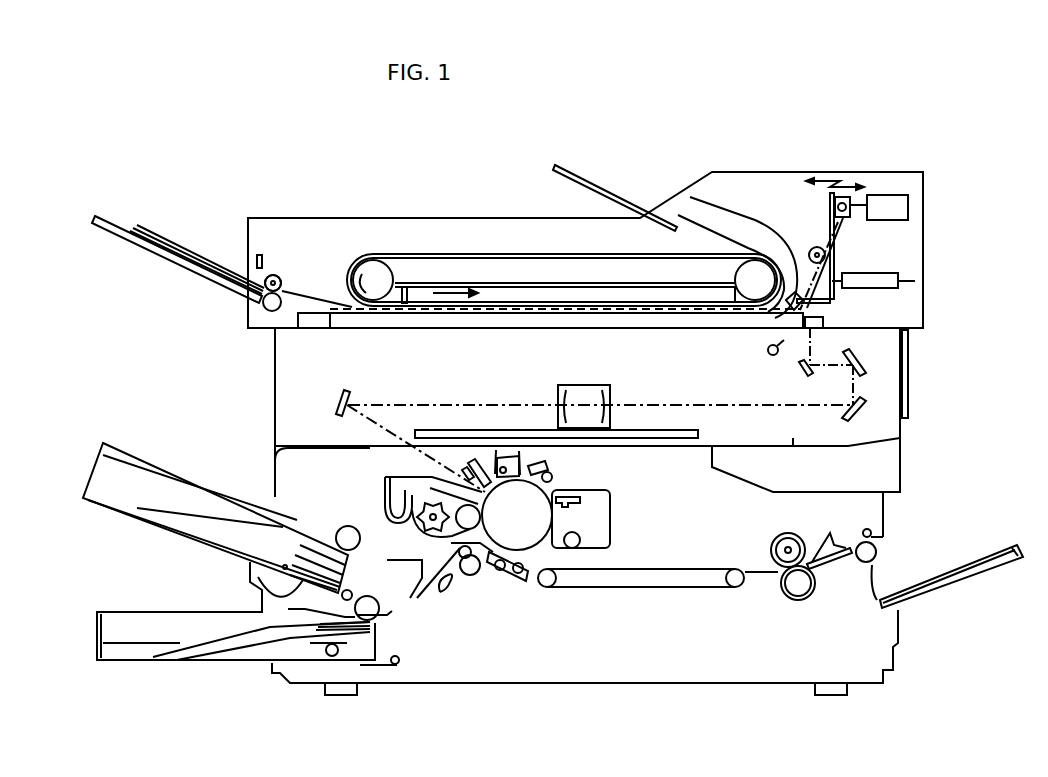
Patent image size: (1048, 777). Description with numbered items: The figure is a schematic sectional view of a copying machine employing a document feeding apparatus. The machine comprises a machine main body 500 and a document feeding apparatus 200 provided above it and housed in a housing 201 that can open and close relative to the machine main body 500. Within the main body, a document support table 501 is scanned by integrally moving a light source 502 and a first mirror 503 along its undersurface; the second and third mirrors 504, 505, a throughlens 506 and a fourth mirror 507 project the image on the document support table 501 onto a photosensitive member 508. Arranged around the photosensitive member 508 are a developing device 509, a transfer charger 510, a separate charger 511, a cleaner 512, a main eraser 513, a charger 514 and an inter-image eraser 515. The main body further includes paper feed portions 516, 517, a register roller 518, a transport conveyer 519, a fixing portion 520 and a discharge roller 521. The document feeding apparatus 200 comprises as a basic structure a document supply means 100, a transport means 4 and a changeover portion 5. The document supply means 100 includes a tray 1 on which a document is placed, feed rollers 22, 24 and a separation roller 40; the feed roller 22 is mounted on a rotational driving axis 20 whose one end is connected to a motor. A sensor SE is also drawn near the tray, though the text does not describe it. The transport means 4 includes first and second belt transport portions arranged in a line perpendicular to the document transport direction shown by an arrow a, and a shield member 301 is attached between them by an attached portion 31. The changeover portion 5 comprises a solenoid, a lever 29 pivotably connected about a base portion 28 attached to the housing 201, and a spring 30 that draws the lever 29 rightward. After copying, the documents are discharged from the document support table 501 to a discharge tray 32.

The document supply means 100 is at (223, 208).
The tray 1 is at (155, 247).
The feed roller 22 is at (273, 275).
The feed roller 24 is at (273, 283).
The rotational driving axis 20 is at (280, 282).
The original sensor SE is at (257, 260).
The separation roller 40 is at (268, 312).
The transport means 4 is at (414, 250).
The attached portion 31 is at (417, 290).
The shield member 301 is at (543, 280).
The arrow a is at (459, 290).
The discharge tray 32 is at (605, 187).
The housing 201 is at (764, 166).
The base portion 28 is at (818, 247).
The changeover portion 5 is at (884, 193).
The lever 29 is at (838, 242).
The spring 30 is at (898, 273).
The document feeding apparatus 200 is at (997, 319).
The machine main body 500 is at (912, 386).
The document support table 501 is at (507, 330).
The light source 502 is at (766, 352).
The first mirror 503 is at (800, 371).
The second mirror 504 is at (855, 348).
The third mirror 505 is at (855, 410).
The throughlens 506 is at (587, 392).
The fourth mirror 507 is at (345, 390).
The photosensitive member 508 is at (517, 515).
The developing device 509 is at (425, 493).
The transfer charger 510 is at (500, 570).
The separate charger 511 is at (520, 583).
The cleaner 512 is at (598, 522).
The main eraser 513 is at (550, 477).
The charger 514 is at (505, 466).
The inter-image eraser 515 is at (473, 470).
The paper feed portion 516 is at (257, 590).
The paper feed portion 517 is at (308, 648).
The register roller 518 is at (470, 575).
The transport conveyer 519 is at (668, 588).
The fixing portion 520 is at (795, 590).
The discharge roller 521 is at (877, 550).